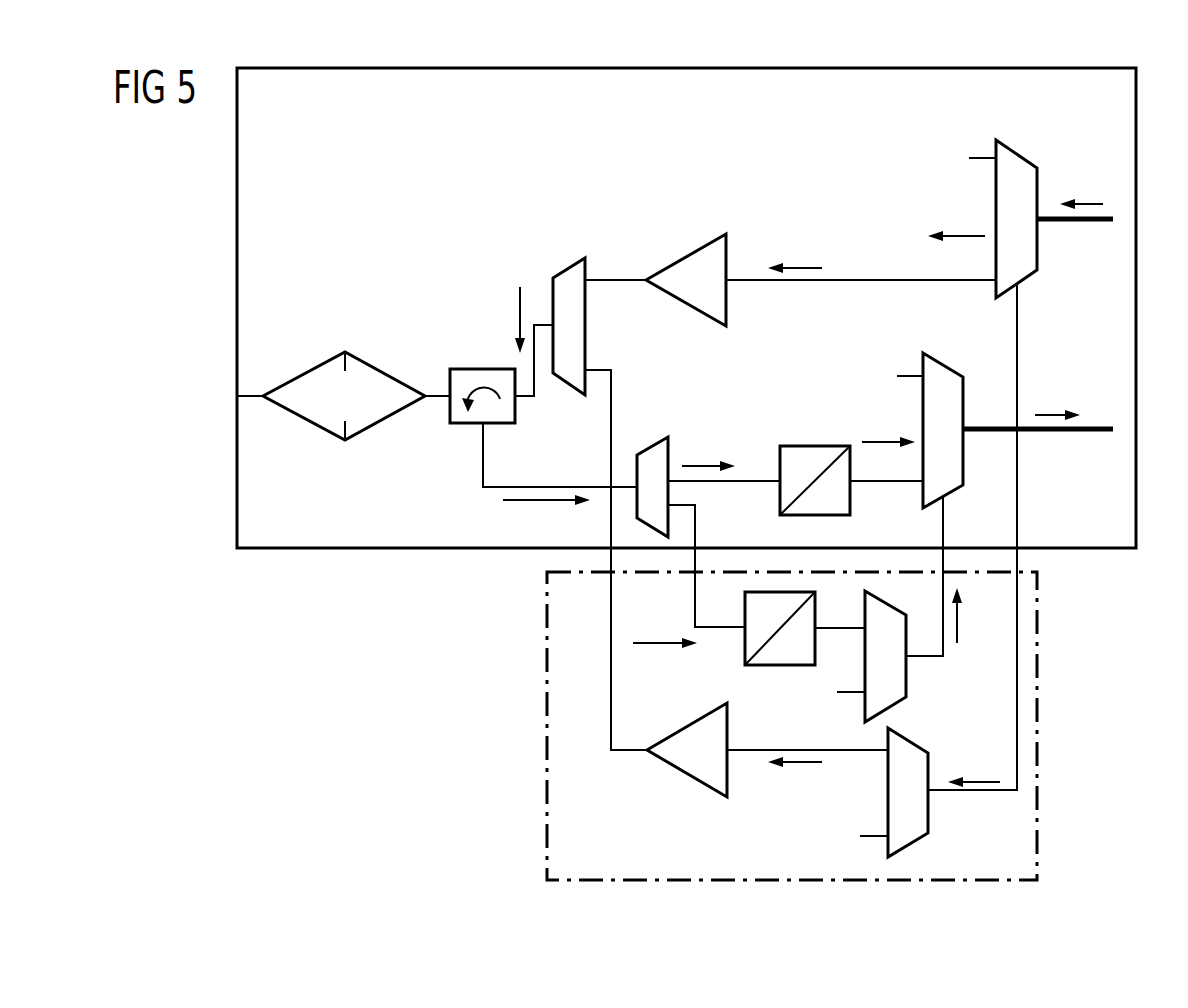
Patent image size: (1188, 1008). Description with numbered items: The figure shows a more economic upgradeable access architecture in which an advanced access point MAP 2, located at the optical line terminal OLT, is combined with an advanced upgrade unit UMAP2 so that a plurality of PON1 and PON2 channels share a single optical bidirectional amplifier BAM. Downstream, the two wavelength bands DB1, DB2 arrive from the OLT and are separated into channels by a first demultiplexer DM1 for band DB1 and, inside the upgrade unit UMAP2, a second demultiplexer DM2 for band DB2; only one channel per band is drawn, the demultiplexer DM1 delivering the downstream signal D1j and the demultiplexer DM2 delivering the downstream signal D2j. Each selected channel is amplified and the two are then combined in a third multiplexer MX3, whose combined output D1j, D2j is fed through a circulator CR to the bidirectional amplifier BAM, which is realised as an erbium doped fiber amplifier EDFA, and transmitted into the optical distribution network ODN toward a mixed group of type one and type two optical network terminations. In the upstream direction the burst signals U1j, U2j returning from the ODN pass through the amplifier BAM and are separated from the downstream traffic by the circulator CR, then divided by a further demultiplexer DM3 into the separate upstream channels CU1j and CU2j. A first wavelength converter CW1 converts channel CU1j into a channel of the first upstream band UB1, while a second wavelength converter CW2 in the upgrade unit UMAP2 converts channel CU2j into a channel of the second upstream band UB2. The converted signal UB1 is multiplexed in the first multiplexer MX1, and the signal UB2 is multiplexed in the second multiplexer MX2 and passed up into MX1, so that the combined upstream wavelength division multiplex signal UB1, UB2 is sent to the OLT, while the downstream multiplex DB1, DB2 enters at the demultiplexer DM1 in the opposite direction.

The optical line terminal OLT is at (712, 308).
The advanced MAP MAP 2 is at (686, 308).
The optical distribution network ODN is at (221, 397).
The erbium doped fiber amplifier EDFA is at (344, 396).
The bidirectional amplifier BAM is at (373, 366).
The circulator CR is at (470, 425).
The third multiplexer MX3 is at (578, 307).
The demultiplexer DM3 is at (647, 447).
The wavelength converter CW1 is at (820, 447).
The multiplexer for UB1 wavelength band MX1 is at (938, 363).
The first demultiplexer DM1 is at (1017, 150).
The advanced upgrade unit UMAP2 is at (792, 726).
The wavelength converter CW2 is at (745, 657).
The multiplexer for UB2 wavelength band MX2 is at (907, 673).
The second demultiplexer DM2 is at (928, 813).
The downstream signal of PON1 D1j is at (796, 249).
The downstream signal of PON2 D2j is at (795, 782).
The downstream signals bands 1 and 2 D1j, D2j is at (498, 317).
The upstream signals bands 1 and 2 U1j, U2j is at (545, 516).
The first upstream channel CU1j is at (709, 449).
The second upstream channel CU2j is at (665, 624).
The first upstream wavelength band UB1 is at (888, 426).
The second upstream wavelength band UB2 is at (979, 617).
The upstream bands 1 and 2 UB1, UB2 is at (1038, 384).
The standard downstream wavelength band DB1 is at (956, 218).
The second downstream wavelength band DB2 is at (977, 763).
The downstream bands 1 and 2 DB1, DB2 is at (1076, 175).